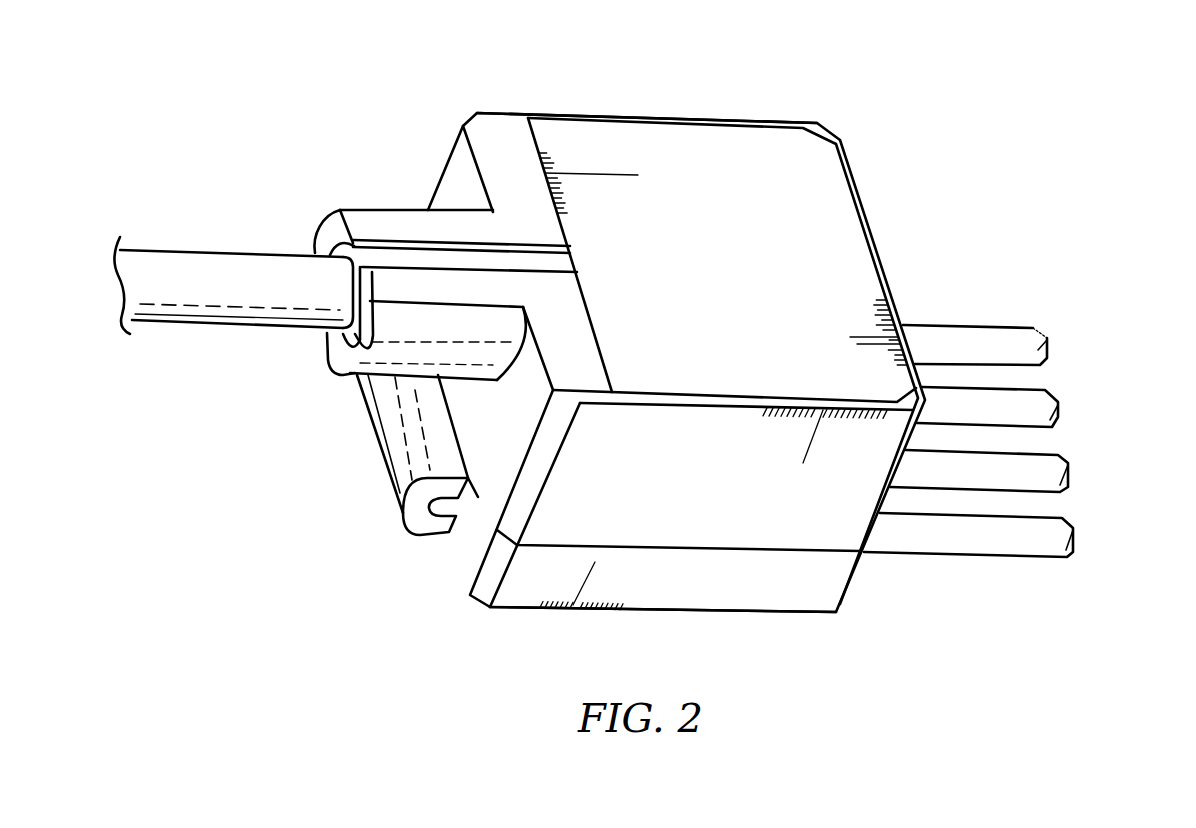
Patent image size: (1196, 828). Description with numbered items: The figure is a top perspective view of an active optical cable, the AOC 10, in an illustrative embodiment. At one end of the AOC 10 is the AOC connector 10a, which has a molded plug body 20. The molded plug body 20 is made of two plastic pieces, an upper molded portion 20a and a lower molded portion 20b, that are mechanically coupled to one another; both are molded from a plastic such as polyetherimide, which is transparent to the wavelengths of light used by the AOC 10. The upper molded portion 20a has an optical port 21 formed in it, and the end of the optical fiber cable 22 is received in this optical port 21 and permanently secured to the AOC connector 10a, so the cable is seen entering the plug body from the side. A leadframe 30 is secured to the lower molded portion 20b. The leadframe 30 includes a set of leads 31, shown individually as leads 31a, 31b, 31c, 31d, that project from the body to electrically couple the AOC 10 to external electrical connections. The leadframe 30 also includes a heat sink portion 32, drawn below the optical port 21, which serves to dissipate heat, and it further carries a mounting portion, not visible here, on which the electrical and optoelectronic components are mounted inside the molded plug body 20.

The AOC 10 is at (368, 96).
The AOC connector 10a is at (842, 104).
The molded plug body 20 is at (832, 176).
The upper molded portion 20a is at (599, 115).
The lower molded portion 20b is at (732, 602).
The optical port 21 is at (383, 223).
The optical fiber cable 22 is at (240, 325).
The leadframe 30 is at (980, 577).
The leads 31 is at (953, 327).
The lead 31a is at (1047, 340).
The lead 31b is at (1058, 405).
The lead 31c is at (1068, 470).
The lead 31d is at (1073, 532).
The heat sink portion 32 is at (395, 462).